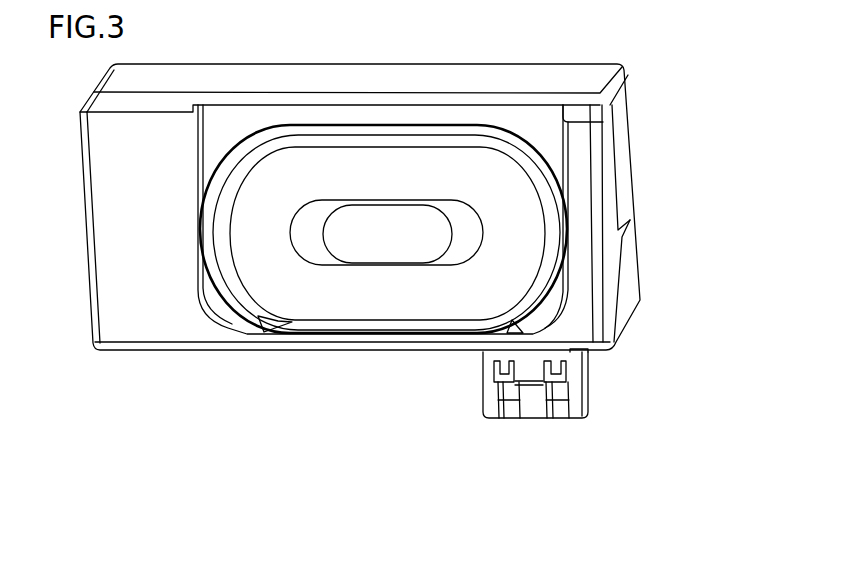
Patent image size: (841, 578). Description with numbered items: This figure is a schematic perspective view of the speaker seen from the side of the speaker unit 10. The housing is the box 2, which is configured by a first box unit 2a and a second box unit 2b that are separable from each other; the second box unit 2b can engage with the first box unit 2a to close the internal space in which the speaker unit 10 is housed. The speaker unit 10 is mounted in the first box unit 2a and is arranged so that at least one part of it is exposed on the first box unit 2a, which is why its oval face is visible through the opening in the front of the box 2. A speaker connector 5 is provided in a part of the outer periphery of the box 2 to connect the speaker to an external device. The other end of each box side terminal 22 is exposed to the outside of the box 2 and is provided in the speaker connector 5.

The box 2 is at (404, 207).
The first box unit 2a is at (655, 281).
The second box unit 2b is at (625, 163).
The speaker unit 10 is at (385, 240).
The speaker connector 5 is at (580, 390).
The box side terminal 22 is at (508, 418).